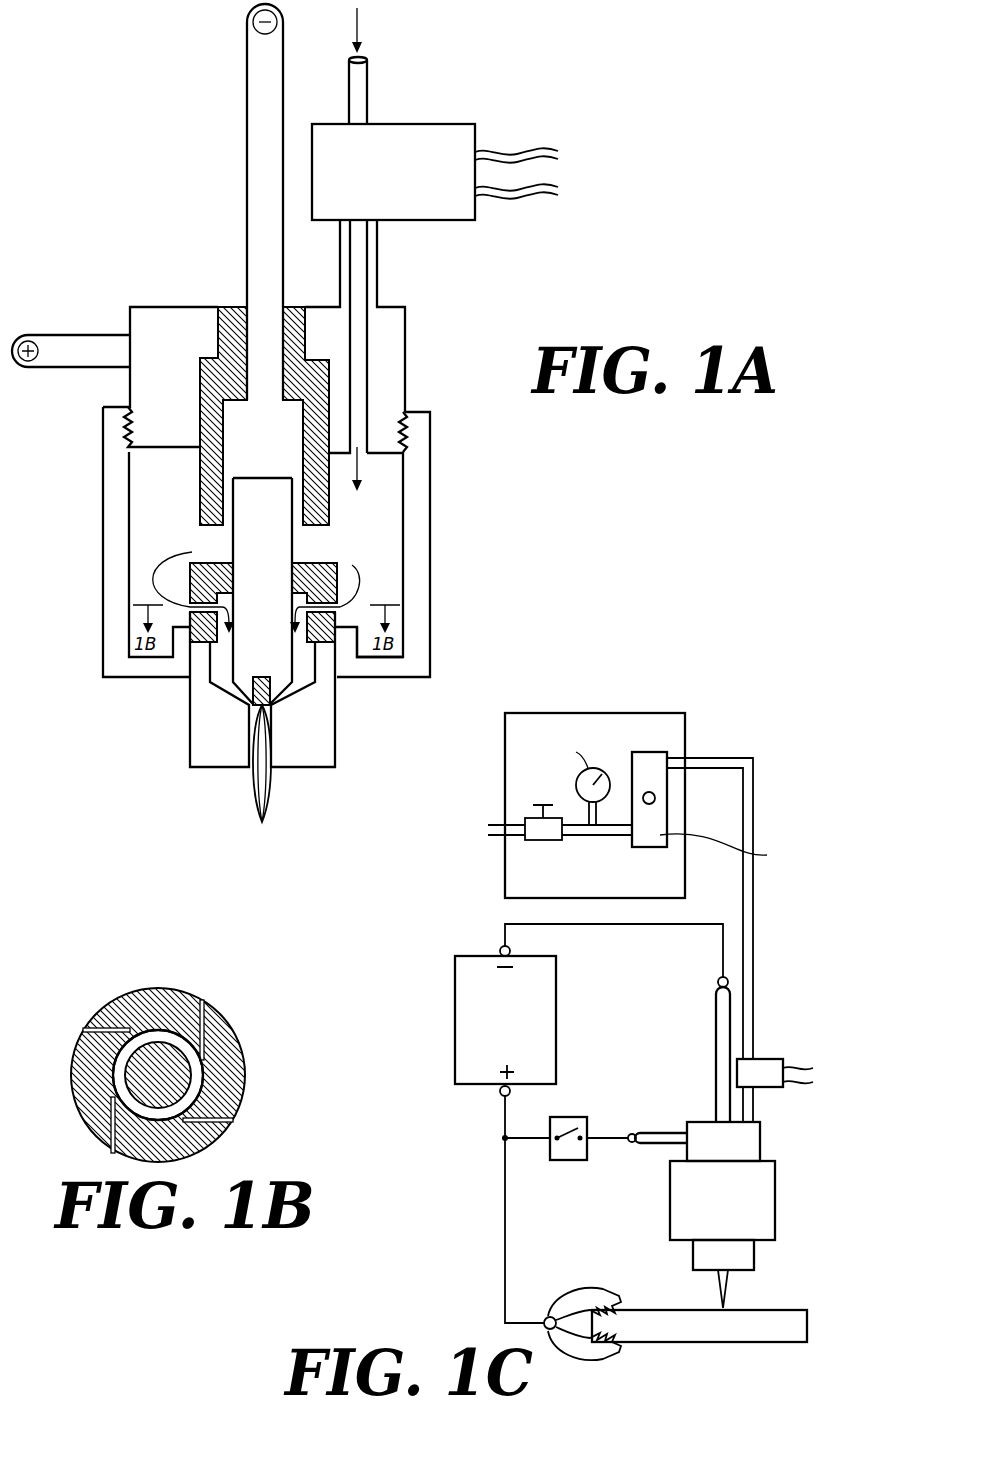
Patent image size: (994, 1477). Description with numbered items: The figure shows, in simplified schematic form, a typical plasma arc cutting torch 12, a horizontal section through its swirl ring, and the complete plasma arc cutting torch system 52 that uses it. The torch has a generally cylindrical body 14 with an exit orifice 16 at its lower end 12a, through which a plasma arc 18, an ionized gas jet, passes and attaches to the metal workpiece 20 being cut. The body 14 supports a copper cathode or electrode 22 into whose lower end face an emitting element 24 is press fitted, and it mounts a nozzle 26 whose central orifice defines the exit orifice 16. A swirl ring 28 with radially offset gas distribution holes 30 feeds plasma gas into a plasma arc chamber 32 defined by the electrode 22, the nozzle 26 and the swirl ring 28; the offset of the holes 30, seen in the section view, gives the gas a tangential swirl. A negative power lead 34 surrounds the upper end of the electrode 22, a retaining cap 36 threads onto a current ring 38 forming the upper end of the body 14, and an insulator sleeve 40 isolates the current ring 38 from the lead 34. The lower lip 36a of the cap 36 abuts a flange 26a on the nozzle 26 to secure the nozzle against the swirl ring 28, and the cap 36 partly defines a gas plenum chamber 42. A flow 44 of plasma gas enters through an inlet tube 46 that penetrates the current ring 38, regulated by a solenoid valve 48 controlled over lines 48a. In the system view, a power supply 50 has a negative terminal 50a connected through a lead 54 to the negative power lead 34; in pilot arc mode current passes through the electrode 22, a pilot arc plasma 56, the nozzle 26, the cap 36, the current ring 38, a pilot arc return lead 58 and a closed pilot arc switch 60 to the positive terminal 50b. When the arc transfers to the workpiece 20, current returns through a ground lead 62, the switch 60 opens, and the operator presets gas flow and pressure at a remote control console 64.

In FIG. 1A, the plasma arc cutting torch 12 is at (252, 466).
In FIG. 1C, the plasma arc cutting torch 12 is at (748, 1215).
In FIG. 1A, the lower end 12a is at (283, 660).
In FIG. 1A, the torch body 14 is at (428, 347).
In FIG. 1C, the torch body 14 is at (753, 1192).
In FIG. 1A, the exit orifice 16 is at (248, 778).
In FIG. 1A, the plasma arc 18 is at (267, 757).
In FIG. 1C, the plasma arc 18 is at (730, 1289).
In FIG. 1C, the workpiece 20 is at (788, 1310).
In FIG. 1A, the cathode (electrode) 22 is at (290, 540).
In FIG. 1B, the cathode (electrode) 22 is at (126, 1060).
In FIG. 1A, the emitting element 24 is at (273, 690).
In FIG. 1A, the nozzle 26 is at (338, 766).
In FIG. 1C, the nozzle 26 is at (754, 1253).
In FIG. 1A, the flange 26a is at (175, 647).
In FIG. 1A, the swirl ring 28 is at (340, 564).
In FIG. 1B, the swirl ring 28 is at (236, 1034).
In FIG. 1A, the gas distribution holes 30 is at (346, 608).
In FIG. 1B, the gas distribution holes 30 is at (201, 1006).
In FIG. 1A, the plasma arc chamber 32 is at (245, 710).
In FIG. 1B, the plasma arc chamber 32 is at (196, 1086).
In FIG. 1A, the negative power lead 34 is at (284, 62).
In FIG. 1C, the negative power lead 34 is at (716, 1037).
In FIG. 1A, the retaining cap 36 is at (431, 421).
In FIG. 1A, the lower lip 36a is at (343, 681).
In FIG. 1A, the current ring 38 is at (166, 306).
In FIG. 1A, the insulator sleeve 40 is at (228, 306).
In FIG. 1A, the gas plenum chamber 42 is at (387, 485).
In FIG. 1A, the flow of plasma gas 44 is at (361, 18).
In FIG. 1A, the inlet tube 46 is at (360, 266).
In FIG. 1A, the solenoid valve 48 is at (398, 124).
In FIG. 1C, the solenoid valve 48 is at (763, 1060).
In FIG. 1A, the control lines 48a is at (517, 162).
In FIG. 1C, the power supply 50 is at (557, 1005).
In FIG. 1C, the negative power supply terminal 50a is at (501, 949).
In FIG. 1C, the power supply positive terminal 50b is at (503, 1096).
In FIG. 1C, the plasma arc cutting torch system 52 is at (657, 914).
In FIG. 1C, the lead 54 is at (625, 924).
In FIG. 1A, the pilot arc plasma 56 is at (235, 708).
In FIG. 1C, the pilot arc return lead 58 is at (609, 1138).
In FIG. 1C, the pilot arc switch 60 is at (566, 1117).
In FIG. 1C, the ground lead 62 is at (505, 1278).
In FIG. 1C, the control console 64 is at (684, 726).